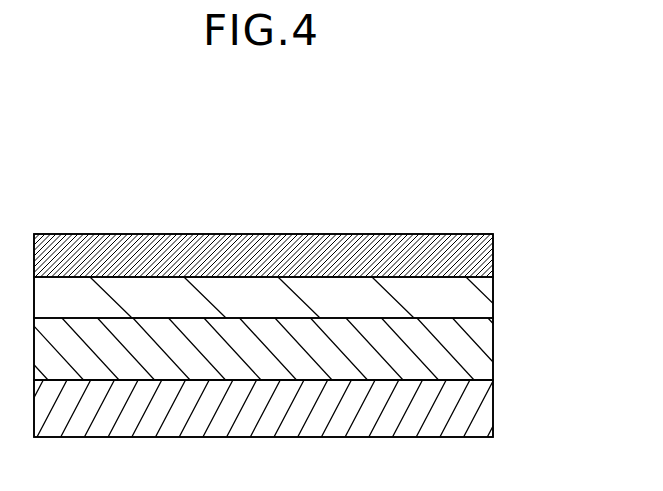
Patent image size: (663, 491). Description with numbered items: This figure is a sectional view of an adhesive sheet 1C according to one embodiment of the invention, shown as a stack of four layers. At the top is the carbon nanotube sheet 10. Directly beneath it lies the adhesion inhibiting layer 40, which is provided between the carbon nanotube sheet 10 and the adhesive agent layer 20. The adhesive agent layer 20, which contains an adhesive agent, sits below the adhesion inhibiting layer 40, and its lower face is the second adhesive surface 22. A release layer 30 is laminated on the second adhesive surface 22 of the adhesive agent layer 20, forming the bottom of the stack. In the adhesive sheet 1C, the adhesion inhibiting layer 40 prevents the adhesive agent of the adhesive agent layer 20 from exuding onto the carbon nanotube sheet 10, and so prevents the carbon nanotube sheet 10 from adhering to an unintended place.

The adhesive sheet 1C is at (398, 188).
The carbon nanotube sheet 10 is at (494, 246).
The adhesion inhibiting layer 40 is at (485, 290).
The adhesive agent layer 20 is at (485, 340).
The second adhesive surface 22 is at (460, 382).
The release layer 30 is at (485, 419).